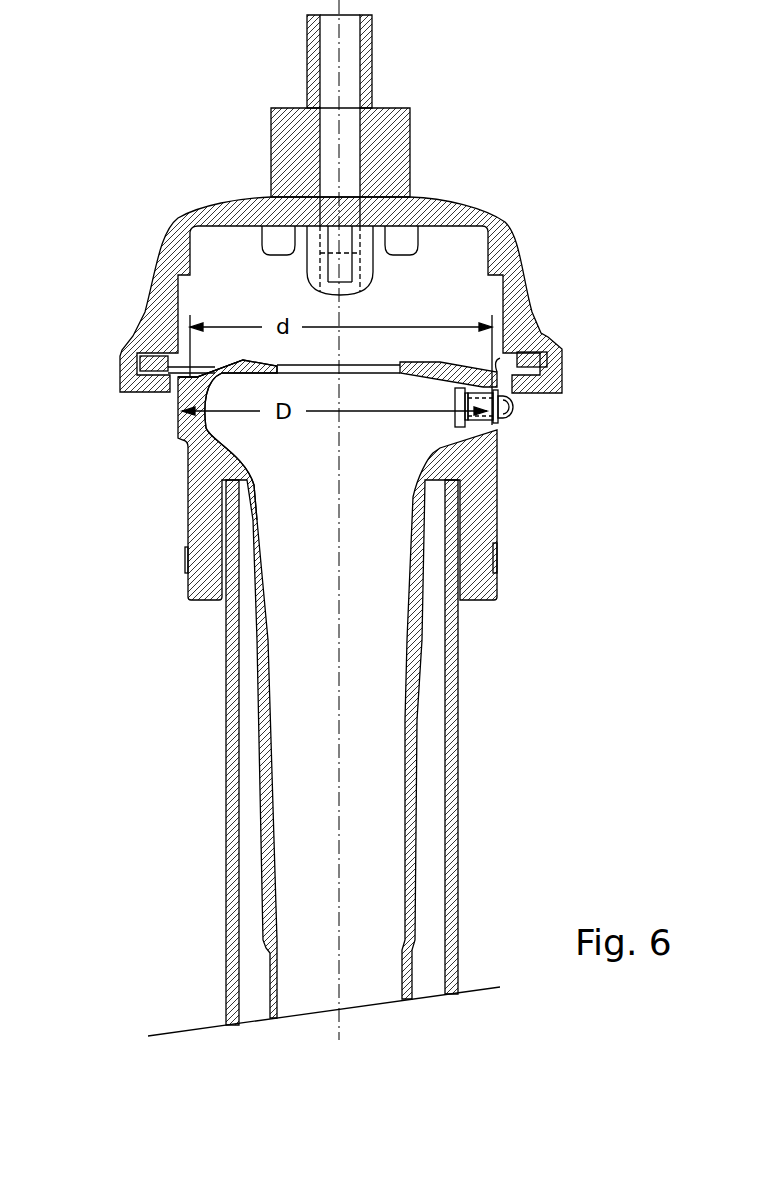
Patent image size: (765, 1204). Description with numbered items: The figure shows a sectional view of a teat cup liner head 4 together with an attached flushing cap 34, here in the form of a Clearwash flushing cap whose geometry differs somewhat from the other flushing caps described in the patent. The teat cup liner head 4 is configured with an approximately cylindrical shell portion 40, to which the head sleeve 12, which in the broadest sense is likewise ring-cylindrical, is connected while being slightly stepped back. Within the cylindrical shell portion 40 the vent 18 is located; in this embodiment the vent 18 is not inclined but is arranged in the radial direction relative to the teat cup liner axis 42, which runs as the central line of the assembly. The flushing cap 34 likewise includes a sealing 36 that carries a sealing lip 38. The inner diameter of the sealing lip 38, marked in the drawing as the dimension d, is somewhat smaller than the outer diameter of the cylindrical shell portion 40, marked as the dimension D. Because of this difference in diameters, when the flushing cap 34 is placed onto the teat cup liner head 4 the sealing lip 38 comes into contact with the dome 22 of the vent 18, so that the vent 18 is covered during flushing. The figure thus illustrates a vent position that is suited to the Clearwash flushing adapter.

The teat cup liner head 4 is at (193, 392).
The head sleeve 12 is at (279, 689).
The vent 18 is at (505, 420).
The dome 22 is at (570, 440).
The flushing cap 34 is at (523, 268).
The sealing 36 is at (560, 367).
The sealing lip 38 is at (498, 370).
The cylindrical shell portion 40 is at (178, 427).
The teat cup liner axis 42 is at (340, 719).